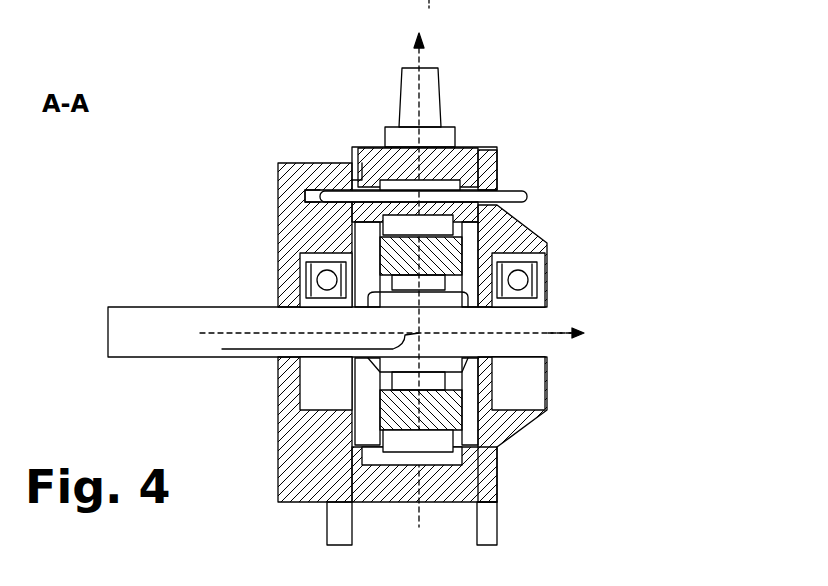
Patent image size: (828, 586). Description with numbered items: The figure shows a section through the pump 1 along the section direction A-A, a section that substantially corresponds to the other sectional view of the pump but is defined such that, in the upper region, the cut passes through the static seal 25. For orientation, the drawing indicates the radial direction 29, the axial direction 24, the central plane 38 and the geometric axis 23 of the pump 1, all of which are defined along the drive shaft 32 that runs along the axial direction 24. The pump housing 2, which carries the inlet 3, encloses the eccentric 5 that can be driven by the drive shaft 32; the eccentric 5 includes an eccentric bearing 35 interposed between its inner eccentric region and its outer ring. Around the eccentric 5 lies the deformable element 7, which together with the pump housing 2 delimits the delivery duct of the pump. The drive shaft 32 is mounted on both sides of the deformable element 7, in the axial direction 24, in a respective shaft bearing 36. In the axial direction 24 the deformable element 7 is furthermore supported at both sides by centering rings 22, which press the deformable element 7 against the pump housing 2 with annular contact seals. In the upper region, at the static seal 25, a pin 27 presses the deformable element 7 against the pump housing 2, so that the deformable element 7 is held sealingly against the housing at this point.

The pump 1 is at (118, 203).
The pump housing 2 is at (500, 183).
The inlet 3 is at (432, 80).
The eccentric 5 is at (222, 352).
The deformable element 7 is at (403, 400).
The centering rings 22 is at (477, 447).
The geometric axis 23 is at (555, 328).
The axial direction 24 is at (563, 330).
The static seal 25 is at (417, 207).
The pin 27 is at (360, 194).
The radial direction 29 is at (420, 55).
The drive shaft 32 is at (173, 307).
The eccentric bearing 35 is at (457, 268).
The shaft bearing 36 is at (278, 398).
The central plane 38 is at (420, 58).